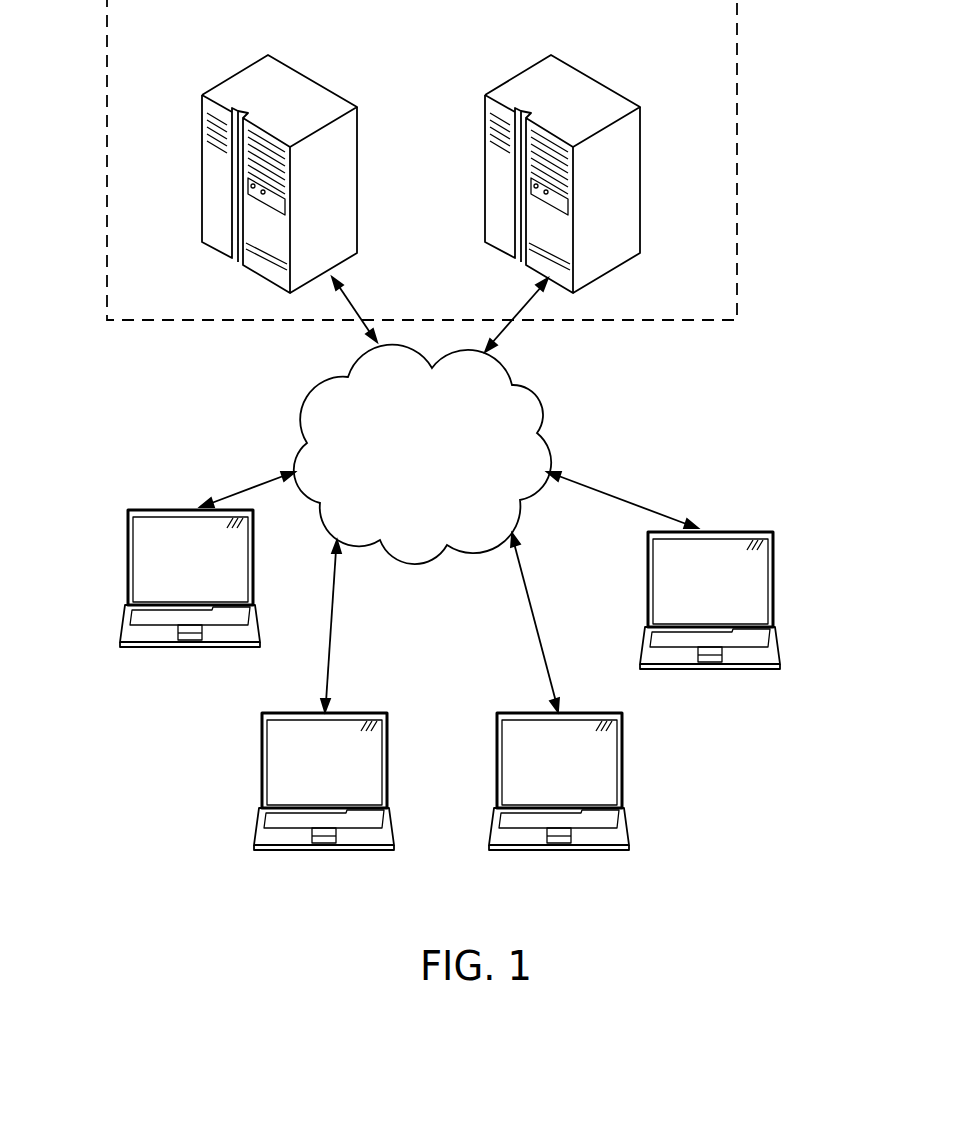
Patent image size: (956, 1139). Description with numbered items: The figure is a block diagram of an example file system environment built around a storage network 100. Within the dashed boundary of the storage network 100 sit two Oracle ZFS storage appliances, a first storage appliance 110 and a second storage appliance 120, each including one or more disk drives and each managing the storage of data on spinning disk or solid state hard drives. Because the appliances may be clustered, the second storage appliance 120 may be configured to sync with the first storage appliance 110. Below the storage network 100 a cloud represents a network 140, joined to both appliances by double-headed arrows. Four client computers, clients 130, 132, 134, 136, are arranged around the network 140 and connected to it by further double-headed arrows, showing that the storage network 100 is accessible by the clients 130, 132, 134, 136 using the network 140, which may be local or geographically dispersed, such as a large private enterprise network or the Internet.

The storage network 100 is at (438, 63).
The first storage appliance 110 is at (643, 173).
The second storage appliance 120 is at (202, 175).
The client 130 is at (128, 512).
The client 132 is at (262, 758).
The client 134 is at (622, 750).
The client 136 is at (773, 567).
The network 140 is at (404, 478).